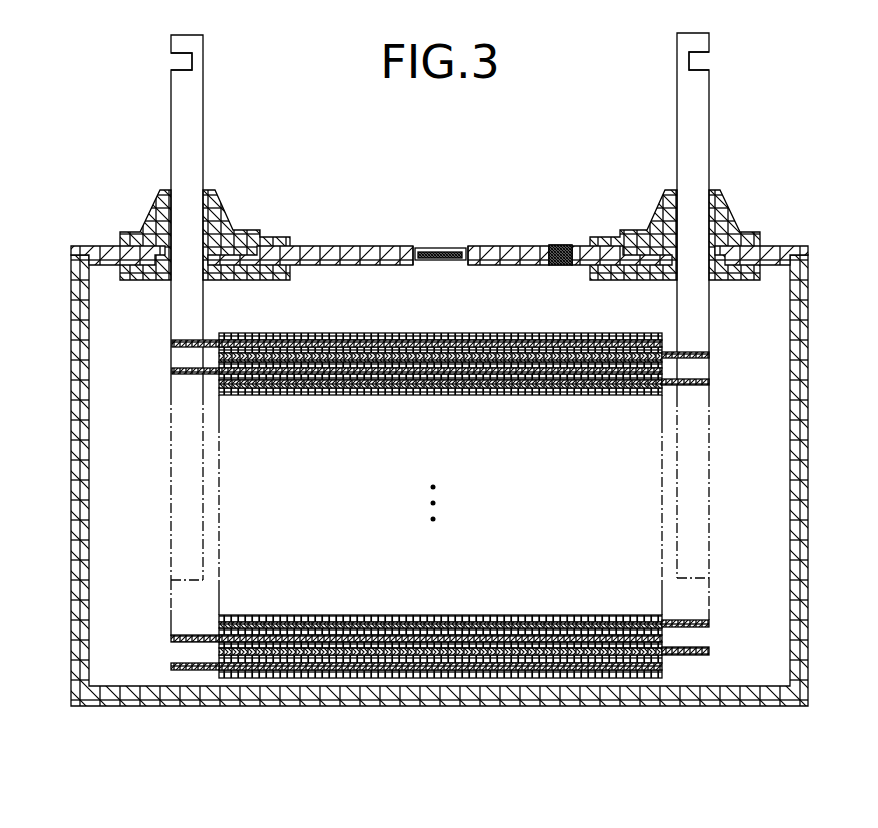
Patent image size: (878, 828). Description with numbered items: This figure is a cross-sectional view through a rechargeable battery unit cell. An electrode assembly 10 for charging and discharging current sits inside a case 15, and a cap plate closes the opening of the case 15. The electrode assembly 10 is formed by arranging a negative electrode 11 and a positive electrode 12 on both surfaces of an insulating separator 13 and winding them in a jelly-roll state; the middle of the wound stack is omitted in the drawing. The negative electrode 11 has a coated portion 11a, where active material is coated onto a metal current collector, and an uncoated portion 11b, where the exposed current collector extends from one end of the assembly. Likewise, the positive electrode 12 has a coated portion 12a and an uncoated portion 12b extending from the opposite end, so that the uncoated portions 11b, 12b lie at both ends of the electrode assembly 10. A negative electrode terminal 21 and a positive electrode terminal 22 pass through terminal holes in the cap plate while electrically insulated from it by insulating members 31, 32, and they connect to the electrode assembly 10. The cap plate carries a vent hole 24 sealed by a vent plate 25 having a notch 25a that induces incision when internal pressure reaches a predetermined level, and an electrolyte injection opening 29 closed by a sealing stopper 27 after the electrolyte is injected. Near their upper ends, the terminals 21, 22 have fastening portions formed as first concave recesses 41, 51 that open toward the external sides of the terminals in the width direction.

The electrode assembly 10 is at (440, 564).
The negative electrode 11 is at (416, 567).
The coated portion 11a is at (302, 646).
The uncoated portion 11b is at (195, 548).
The positive electrode 12 is at (464, 573).
The coated portion 12a is at (541, 656).
The uncoated portion 12b is at (673, 554).
The separator 13 is at (437, 646).
The case 15 is at (805, 508).
The negative electrode terminal 21 is at (169, 335).
The positive electrode terminal 22 is at (711, 326).
The vent hole 24 is at (452, 266).
The vent plate 25 is at (466, 247).
The notch 25a is at (431, 249).
The sealing stopper 27 is at (560, 244).
The electrolyte injection opening 29 is at (563, 266).
The insulating member 31 is at (156, 213).
The insulating member 32 is at (725, 212).
The first concave recess 41 is at (180, 61).
The first concave recess 51 is at (699, 61).